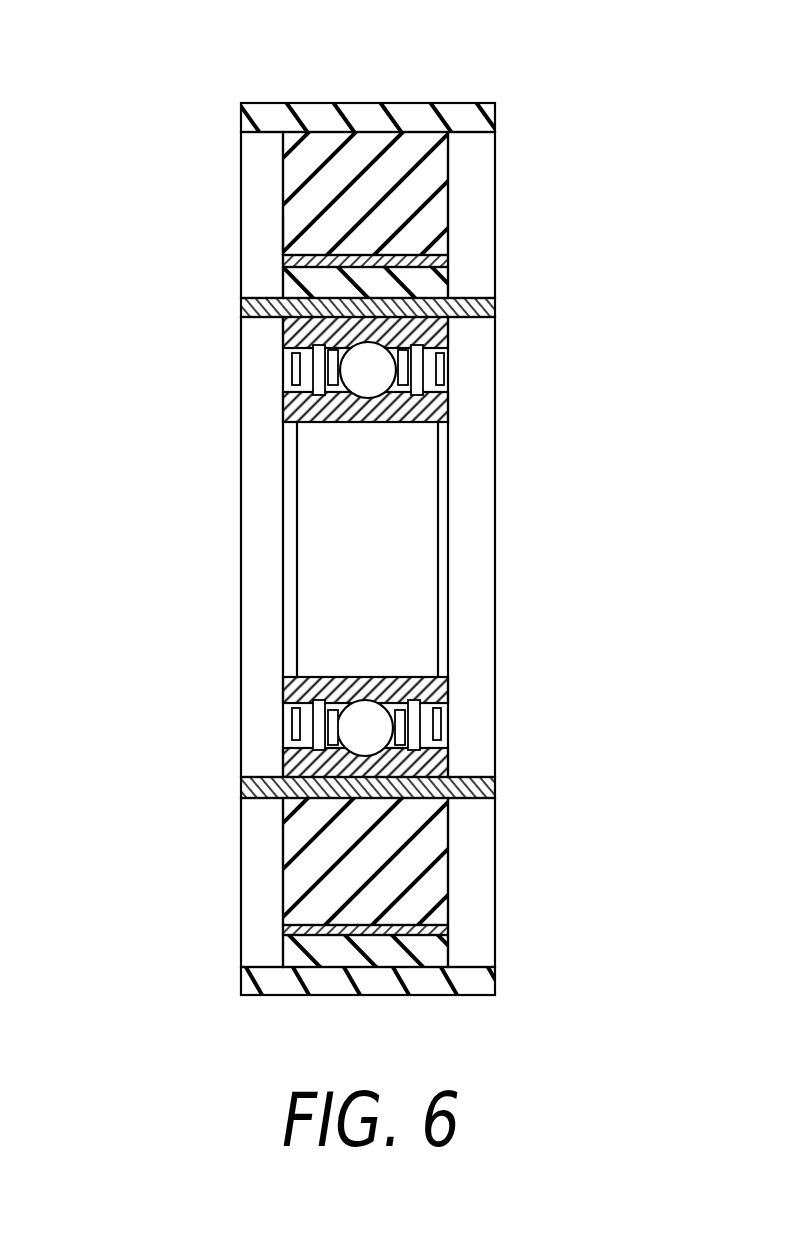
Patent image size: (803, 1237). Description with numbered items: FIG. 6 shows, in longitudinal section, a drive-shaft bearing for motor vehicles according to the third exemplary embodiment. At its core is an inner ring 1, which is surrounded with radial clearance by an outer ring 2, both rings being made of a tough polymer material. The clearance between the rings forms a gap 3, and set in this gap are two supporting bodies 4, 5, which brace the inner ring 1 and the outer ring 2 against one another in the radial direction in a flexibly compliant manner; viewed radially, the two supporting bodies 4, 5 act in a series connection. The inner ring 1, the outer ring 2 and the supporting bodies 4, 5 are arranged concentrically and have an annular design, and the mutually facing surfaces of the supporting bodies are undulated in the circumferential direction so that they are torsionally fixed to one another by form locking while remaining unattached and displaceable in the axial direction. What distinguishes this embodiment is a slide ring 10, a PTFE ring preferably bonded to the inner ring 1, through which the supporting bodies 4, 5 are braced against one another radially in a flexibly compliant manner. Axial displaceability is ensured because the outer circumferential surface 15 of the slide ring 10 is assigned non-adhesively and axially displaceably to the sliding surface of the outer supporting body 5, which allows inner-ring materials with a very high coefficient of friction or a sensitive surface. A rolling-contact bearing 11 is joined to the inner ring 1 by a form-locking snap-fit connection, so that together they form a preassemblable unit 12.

The inner ring 1 is at (270, 318).
The outer ring 2 is at (415, 113).
The gap 3 is at (475, 227).
The supporting body 4 is at (435, 287).
The outer supporting body 5 is at (433, 173).
The slide ring 10 is at (293, 260).
The rolling-contact bearing 11 is at (377, 732).
The preassemblable unit 12 is at (290, 688).
The outer circumferential surface 15 is at (303, 247).